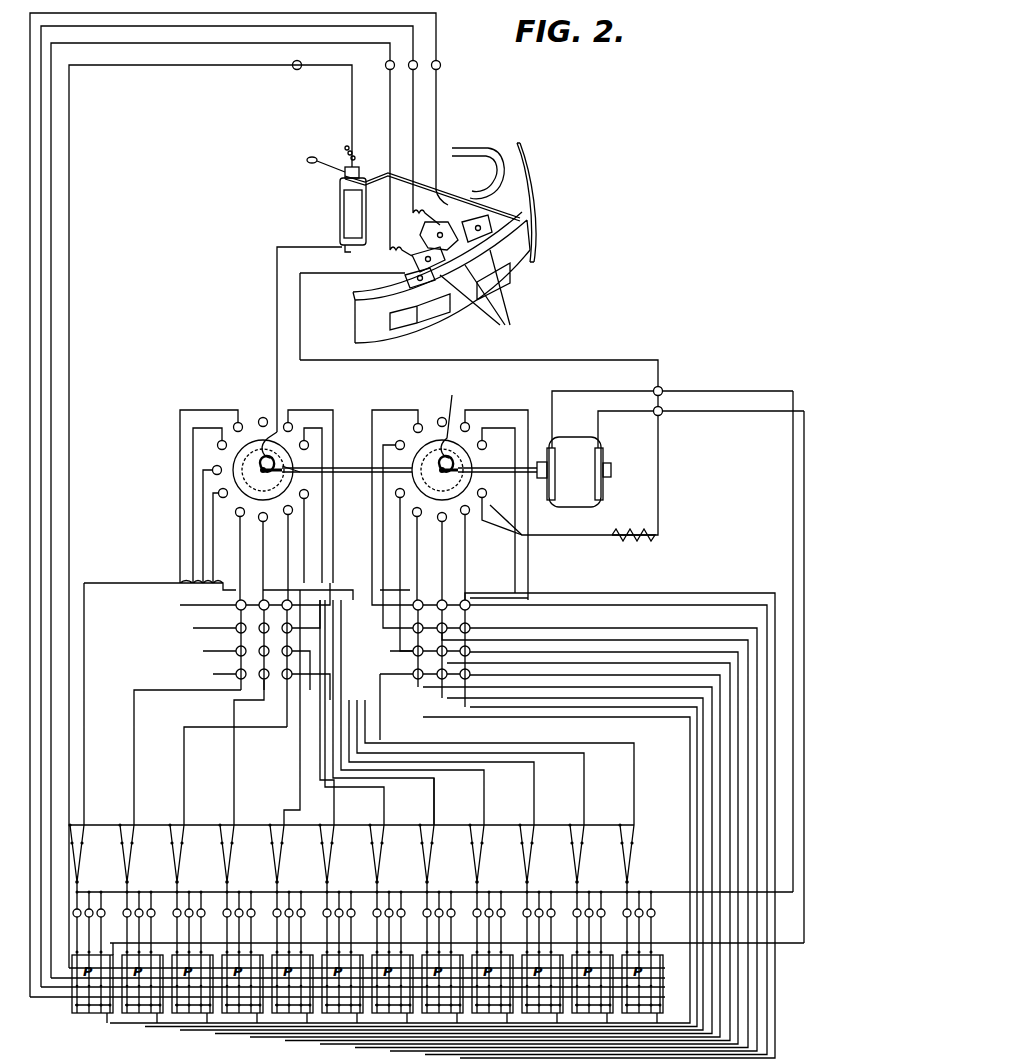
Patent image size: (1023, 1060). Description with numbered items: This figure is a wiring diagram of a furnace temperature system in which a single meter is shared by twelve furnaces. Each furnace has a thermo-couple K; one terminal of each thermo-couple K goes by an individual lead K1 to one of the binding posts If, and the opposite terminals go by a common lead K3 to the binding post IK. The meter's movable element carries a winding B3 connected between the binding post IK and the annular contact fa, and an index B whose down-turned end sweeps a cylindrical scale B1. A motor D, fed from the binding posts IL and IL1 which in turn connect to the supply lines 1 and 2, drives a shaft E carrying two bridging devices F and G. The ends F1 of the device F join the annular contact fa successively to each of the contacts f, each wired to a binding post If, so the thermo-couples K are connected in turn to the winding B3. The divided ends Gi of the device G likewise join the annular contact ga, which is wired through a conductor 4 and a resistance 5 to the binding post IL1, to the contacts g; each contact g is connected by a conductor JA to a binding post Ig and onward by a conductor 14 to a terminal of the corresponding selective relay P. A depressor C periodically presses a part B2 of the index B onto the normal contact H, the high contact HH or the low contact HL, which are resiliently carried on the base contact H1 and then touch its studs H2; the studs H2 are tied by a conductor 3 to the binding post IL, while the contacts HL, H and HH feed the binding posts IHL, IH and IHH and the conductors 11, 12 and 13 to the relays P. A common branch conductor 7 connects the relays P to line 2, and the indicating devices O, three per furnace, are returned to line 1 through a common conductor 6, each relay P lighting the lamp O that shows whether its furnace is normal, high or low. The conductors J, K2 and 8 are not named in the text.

The electric current supply line 1 is at (736, 391).
The electric current supply line 2 is at (760, 411).
The conductor 3 is at (576, 360).
The conductor 4 is at (658, 516).
The resistance 5 is at (600, 540).
The common conductor 6 is at (793, 513).
The common branch conductor 7 is at (804, 546).
The conductor 8 is at (277, 325).
The conductor 11 is at (51, 296).
The conductor 12 is at (41, 326).
The conductor 13 is at (30, 358).
The individual conductor 14 is at (712, 660).
The binding post IK is at (290, 86).
The binding post IHL is at (389, 71).
The binding post IH is at (416, 70).
The binding post IHH is at (440, 68).
The winding B3 is at (340, 210).
The index B is at (442, 200).
The depressor C is at (500, 182).
The index part B2 is at (531, 206).
The cylindrical scale B1 is at (522, 280).
The normal temperature contact H is at (432, 224).
The low temperature contact HL is at (412, 260).
The base contact H1 is at (405, 285).
The high temperature contact HH is at (492, 235).
The contact studs H2 is at (476, 297).
The binding post IL is at (662, 388).
The binding post IL1 is at (662, 414).
The flexible contactor bridging device F is at (240, 465).
The end portions of bridging device F1 is at (262, 418).
The contacts f is at (220, 440).
The annular contact fa is at (295, 475).
The shaft E is at (350, 466).
The flexible contactor bridging device G is at (437, 440).
The flexible divided ends Gi is at (453, 398).
The annular contact ga is at (398, 440).
The contacts g is at (485, 440).
The electric motor D is at (574, 472).
The conductors J is at (230, 564).
The individual conductor JA is at (385, 592).
The binding posts If is at (236, 651).
The binding posts Ig is at (465, 680).
The thermo-electric device K is at (618, 862).
The individual lead K1 is at (84, 800).
The key conductor K2 is at (400, 825).
The common lead K3 is at (69, 400).
The indicating device O is at (78, 918).
The selective relay P is at (367, 989).